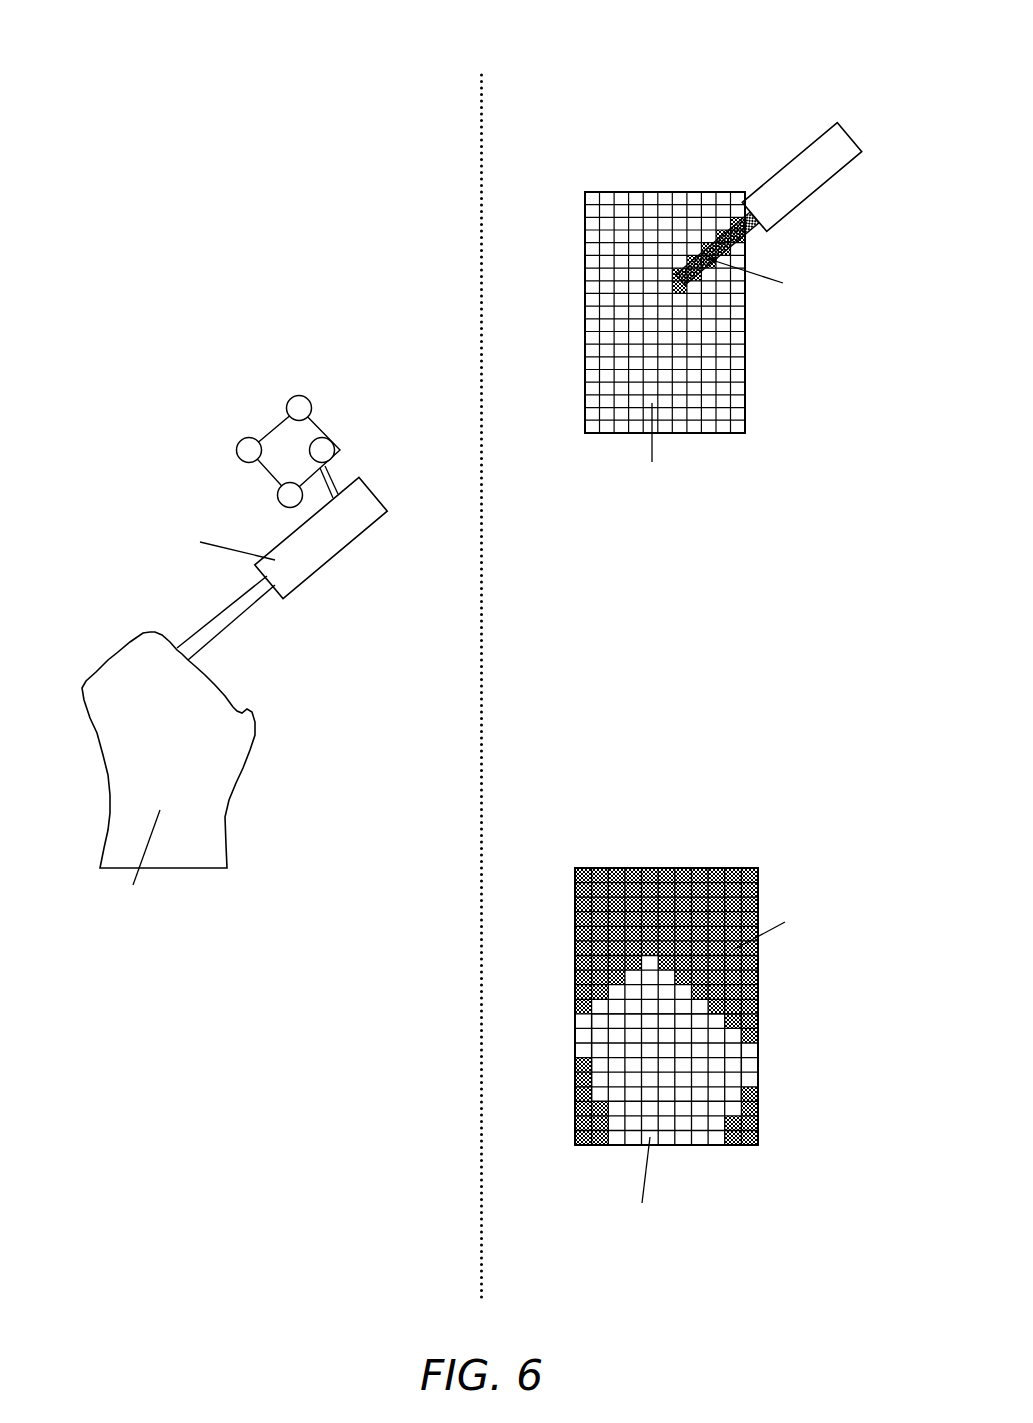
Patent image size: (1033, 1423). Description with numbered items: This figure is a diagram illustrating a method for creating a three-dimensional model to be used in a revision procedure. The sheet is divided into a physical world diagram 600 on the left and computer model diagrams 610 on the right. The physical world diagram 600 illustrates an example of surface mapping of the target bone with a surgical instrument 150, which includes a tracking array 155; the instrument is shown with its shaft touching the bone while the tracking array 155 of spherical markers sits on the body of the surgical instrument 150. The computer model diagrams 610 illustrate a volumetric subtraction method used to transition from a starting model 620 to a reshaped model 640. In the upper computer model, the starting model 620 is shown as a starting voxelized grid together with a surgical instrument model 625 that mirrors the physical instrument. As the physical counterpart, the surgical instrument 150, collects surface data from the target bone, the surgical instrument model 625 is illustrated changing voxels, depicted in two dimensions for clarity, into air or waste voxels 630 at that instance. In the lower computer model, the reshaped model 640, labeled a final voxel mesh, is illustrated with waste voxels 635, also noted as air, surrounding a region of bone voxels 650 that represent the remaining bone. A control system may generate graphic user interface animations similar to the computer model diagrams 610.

The physical world diagram 600 is at (133, 268).
The surgical instrument 150 is at (313, 548).
The tracking array 155 is at (290, 433).
The computer model diagrams 610 is at (783, 52).
The starting model 620 is at (600, 180).
The surgical instrument model 625 is at (788, 188).
The waste voxels 630 is at (693, 273).
The reshaped model 640 is at (588, 860).
The waste voxels 635 is at (717, 892).
The bone voxels 650 is at (712, 1122).